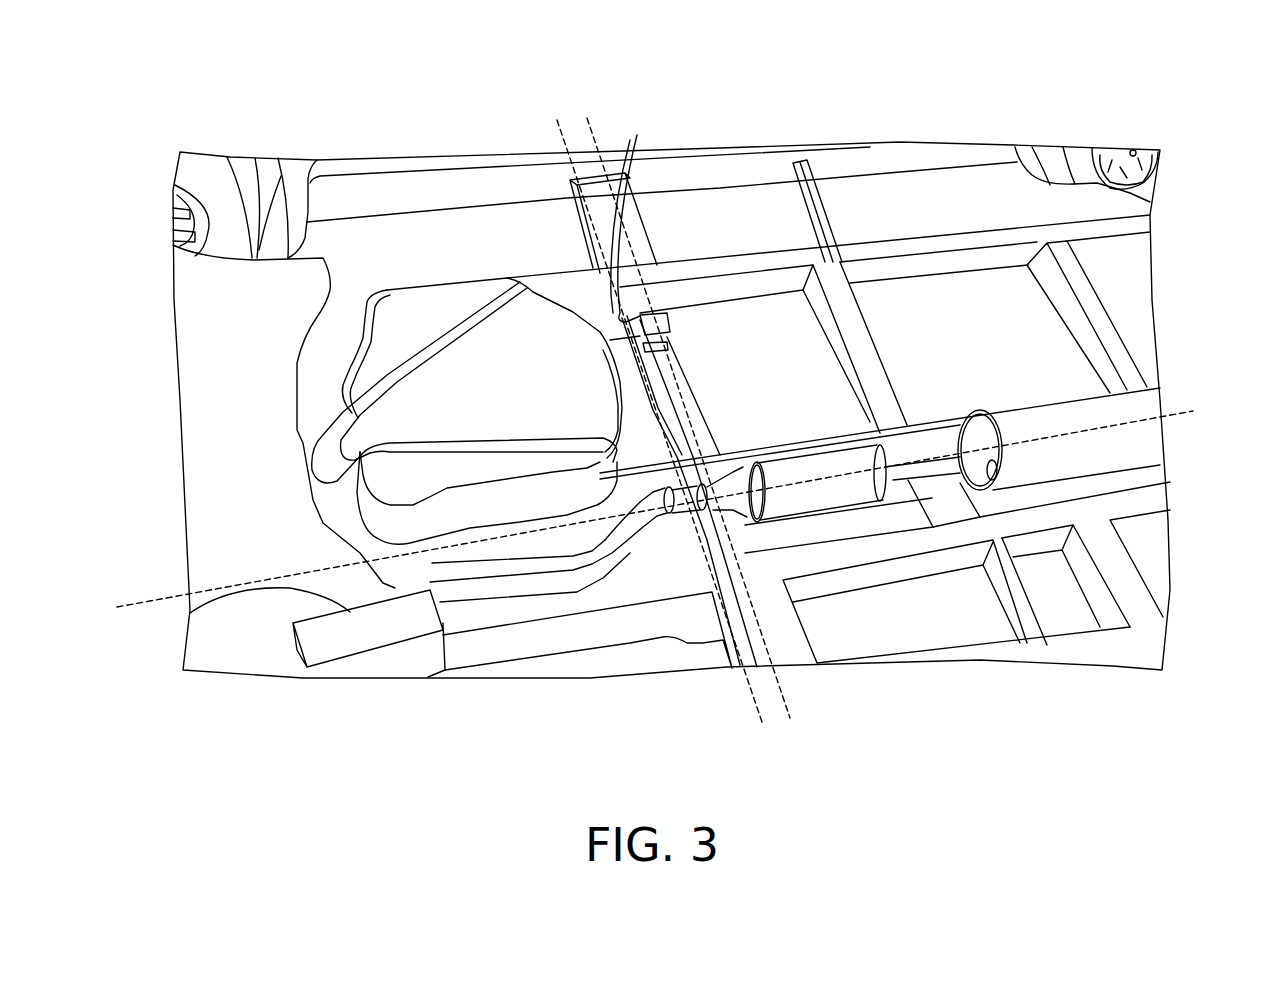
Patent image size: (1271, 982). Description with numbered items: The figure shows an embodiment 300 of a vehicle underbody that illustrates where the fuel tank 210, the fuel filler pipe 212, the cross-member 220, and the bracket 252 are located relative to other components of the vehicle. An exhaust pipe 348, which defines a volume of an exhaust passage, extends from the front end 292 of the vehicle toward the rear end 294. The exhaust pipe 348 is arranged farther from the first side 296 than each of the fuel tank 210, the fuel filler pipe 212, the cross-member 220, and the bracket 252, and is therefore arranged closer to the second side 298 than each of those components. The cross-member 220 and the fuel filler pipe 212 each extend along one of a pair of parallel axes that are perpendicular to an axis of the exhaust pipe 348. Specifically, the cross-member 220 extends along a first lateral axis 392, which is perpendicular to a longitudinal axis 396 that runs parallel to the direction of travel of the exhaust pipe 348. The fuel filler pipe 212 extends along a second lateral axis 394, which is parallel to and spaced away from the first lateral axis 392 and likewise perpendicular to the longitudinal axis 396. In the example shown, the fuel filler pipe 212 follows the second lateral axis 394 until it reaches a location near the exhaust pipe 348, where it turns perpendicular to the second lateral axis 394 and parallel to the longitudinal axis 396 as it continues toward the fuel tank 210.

The embodiment 300 is at (1142, 85).
The fuel tank 210 is at (510, 404).
The fuel filler pipe 212 is at (636, 150).
The cross-member 220 is at (690, 390).
The bracket 252 is at (667, 342).
The exhaust pipe 348 is at (552, 583).
The first lateral axis 392 is at (790, 703).
The second lateral axis 394 is at (558, 136).
The longitudinal axis 396 is at (177, 592).
The front end 292 is at (85, 425).
The rear end 294 is at (1218, 416).
The first side 296 is at (718, 103).
The second side 298 is at (651, 708).